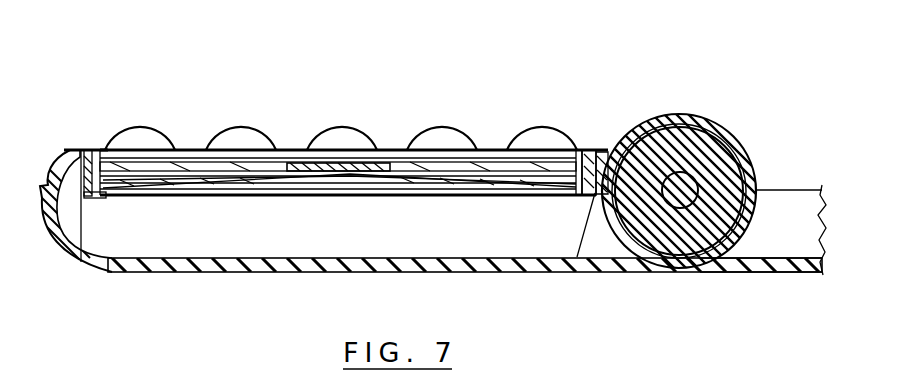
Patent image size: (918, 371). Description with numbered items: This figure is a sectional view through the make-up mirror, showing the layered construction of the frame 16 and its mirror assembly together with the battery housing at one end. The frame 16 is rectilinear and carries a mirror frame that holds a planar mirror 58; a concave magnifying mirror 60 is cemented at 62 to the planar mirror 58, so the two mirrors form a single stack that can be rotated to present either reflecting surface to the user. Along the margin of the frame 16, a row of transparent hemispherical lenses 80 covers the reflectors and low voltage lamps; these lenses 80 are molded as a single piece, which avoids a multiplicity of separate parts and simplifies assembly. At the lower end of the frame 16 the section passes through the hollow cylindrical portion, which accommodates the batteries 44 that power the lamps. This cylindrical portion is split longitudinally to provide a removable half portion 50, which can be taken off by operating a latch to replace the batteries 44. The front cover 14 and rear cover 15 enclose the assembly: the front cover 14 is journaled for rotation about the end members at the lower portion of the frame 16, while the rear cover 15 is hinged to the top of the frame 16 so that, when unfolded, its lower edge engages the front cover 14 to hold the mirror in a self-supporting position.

The front cover 14 is at (805, 272).
The rear cover 15 is at (518, 268).
The frame 16 is at (103, 197).
The batteries 44 is at (700, 232).
The removable half portion 50 is at (730, 133).
The planar mirror 58 is at (484, 152).
The concave magnifying mirror 60 is at (238, 178).
The cement 62 is at (346, 176).
The transparent hemispherical lenses 80 is at (328, 140).